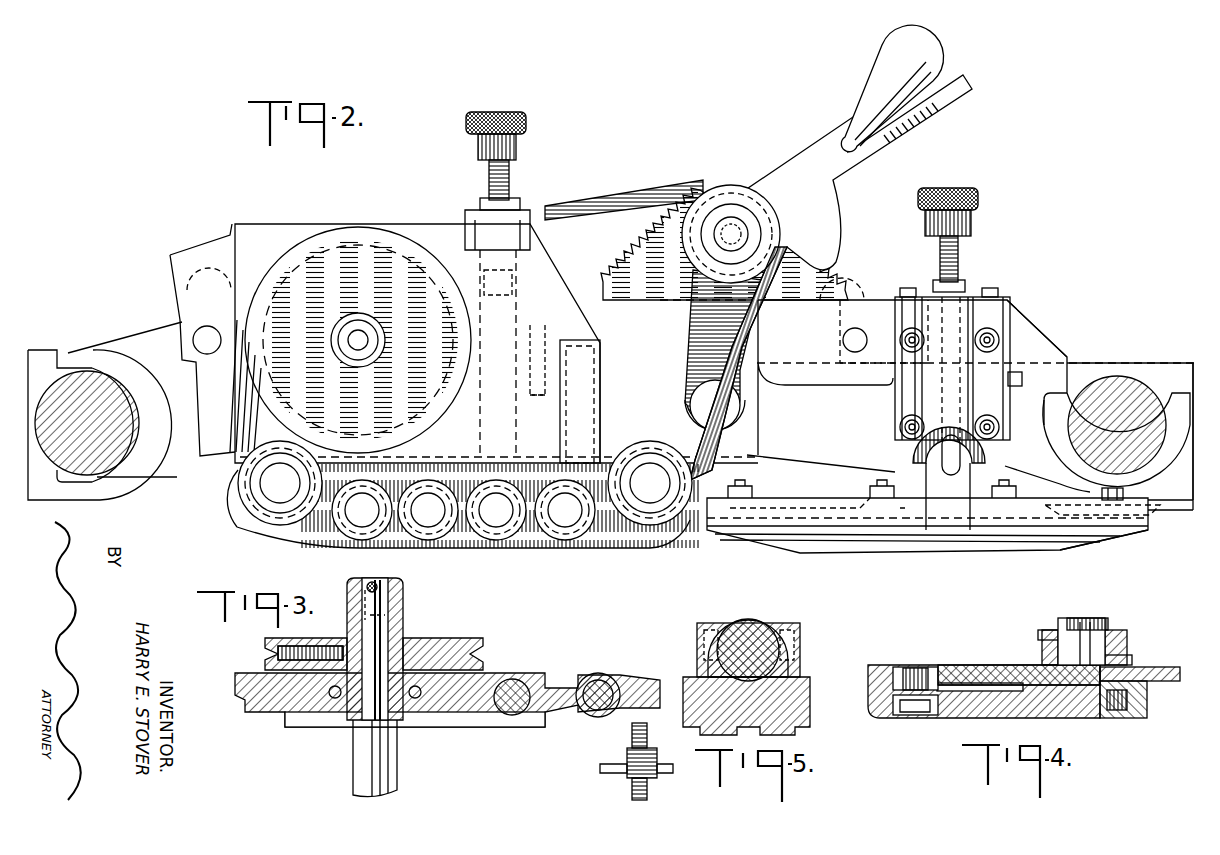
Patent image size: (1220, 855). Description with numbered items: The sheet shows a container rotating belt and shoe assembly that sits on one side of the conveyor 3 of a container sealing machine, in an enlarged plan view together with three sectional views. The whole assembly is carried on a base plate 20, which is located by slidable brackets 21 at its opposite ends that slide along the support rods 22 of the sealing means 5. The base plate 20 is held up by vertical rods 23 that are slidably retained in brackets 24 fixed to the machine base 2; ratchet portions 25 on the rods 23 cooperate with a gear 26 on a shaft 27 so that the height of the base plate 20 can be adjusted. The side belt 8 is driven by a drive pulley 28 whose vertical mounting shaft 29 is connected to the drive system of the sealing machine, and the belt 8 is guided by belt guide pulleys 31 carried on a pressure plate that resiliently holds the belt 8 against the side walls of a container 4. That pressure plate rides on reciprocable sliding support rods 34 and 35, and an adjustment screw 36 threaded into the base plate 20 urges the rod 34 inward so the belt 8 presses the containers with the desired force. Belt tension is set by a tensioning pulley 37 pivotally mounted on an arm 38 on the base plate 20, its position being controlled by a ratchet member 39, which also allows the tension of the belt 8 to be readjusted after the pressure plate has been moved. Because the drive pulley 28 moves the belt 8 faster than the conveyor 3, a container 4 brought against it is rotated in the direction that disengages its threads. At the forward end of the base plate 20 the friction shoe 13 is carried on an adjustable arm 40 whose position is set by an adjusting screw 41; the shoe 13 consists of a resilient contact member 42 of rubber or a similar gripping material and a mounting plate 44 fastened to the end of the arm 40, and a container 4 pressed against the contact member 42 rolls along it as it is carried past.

In FIG. 2, the machine base 2 is at (1108, 370).
In FIG. 2, the conveyor 3 is at (236, 340).
In FIG. 2, the container 4 is at (775, 200).
In FIG. 2, the sealing means 5 is at (880, 440).
In FIG. 2, the side belt 8 is at (662, 192).
In FIG. 2, the friction shoe 13 is at (1005, 548).
In FIG. 2, the base plate 20 is at (133, 342).
In FIG. 3, the base plate 20 is at (562, 690).
In FIG. 5, the base plate 20 is at (812, 692).
In FIG. 4, the base plate 20 is at (963, 688).
In FIG. 2, the slidable brackets 21 is at (93, 355).
In FIG. 2, the support rods 22 is at (70, 385).
In FIG. 2, the vertical rods 23 is at (848, 342).
In FIG. 3, the vertical rods 23 is at (630, 730).
In FIG. 2, the brackets 24 is at (190, 285).
In FIG. 3, the ratchet portions 25 is at (648, 790).
In FIG. 3, the gear 26 is at (655, 758).
In FIG. 3, the shaft 27 is at (612, 768).
In FIG. 2, the drive pulley 28 is at (345, 248).
In FIG. 3, the drive pulley 28 is at (462, 644).
In FIG. 3, the vertical mounting shaft 29 is at (398, 757).
In FIG. 2, the belt guide pulleys 31 is at (270, 450).
In FIG. 2, the sliding support rod 34 is at (520, 304).
In FIG. 2, the sliding support rod 35 is at (578, 345).
In FIG. 5, the sliding support rod 35 is at (765, 635).
In FIG. 2, the adjustment screw 36 is at (488, 181).
In FIG. 2, the tensioning pulley 37 is at (708, 205).
In FIG. 4, the tensioning pulley 37 is at (1122, 642).
In FIG. 4, the arm 38 is at (988, 675).
In FIG. 2, the ratchet member 39 is at (827, 252).
In FIG. 4, the ratchet member 39 is at (1112, 710).
In FIG. 2, the adjustable arm 40 is at (968, 461).
In FIG. 2, the adjusting screw 41 is at (962, 250).
In FIG. 2, the resilient contact member 42 is at (1025, 545).
In FIG. 2, the mounting plate 44 is at (945, 515).